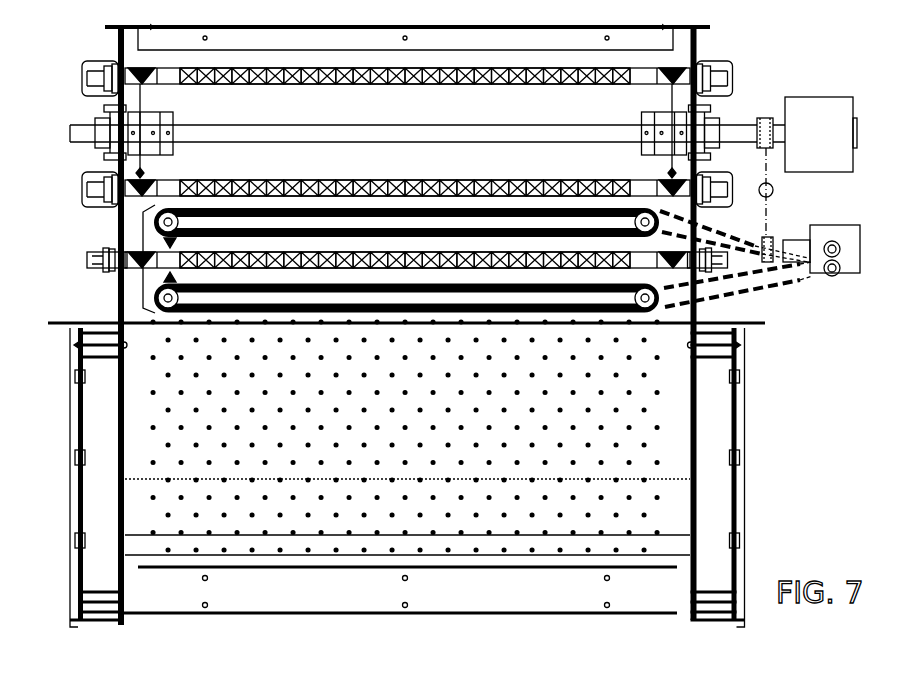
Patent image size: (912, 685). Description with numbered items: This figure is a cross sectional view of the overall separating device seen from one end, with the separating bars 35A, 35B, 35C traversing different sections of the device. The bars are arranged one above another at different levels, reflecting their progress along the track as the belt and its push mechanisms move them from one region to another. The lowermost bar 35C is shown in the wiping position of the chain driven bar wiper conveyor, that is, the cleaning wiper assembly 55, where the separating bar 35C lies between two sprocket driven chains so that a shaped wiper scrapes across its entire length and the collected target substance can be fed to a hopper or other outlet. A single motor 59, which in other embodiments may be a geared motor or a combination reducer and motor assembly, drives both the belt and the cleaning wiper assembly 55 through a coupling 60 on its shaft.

The separating bar 35A is at (168, 77).
The separating bar 35B is at (110, 171).
The separating bar 35C is at (122, 283).
The cleaning wiper assembly 55 is at (143, 245).
The single motor 59 is at (836, 143).
The coupling 60 is at (773, 192).